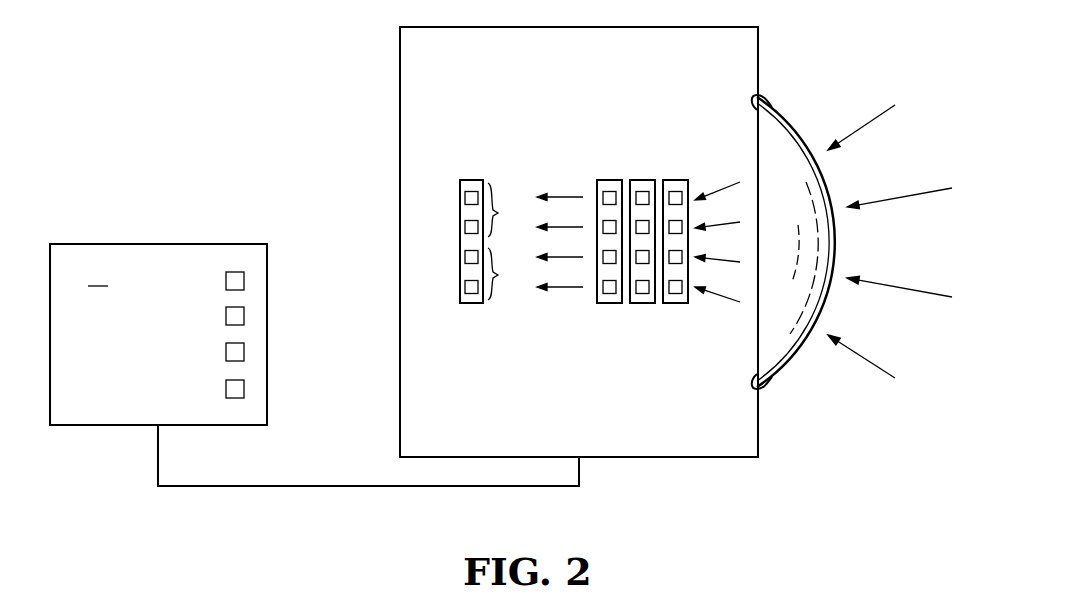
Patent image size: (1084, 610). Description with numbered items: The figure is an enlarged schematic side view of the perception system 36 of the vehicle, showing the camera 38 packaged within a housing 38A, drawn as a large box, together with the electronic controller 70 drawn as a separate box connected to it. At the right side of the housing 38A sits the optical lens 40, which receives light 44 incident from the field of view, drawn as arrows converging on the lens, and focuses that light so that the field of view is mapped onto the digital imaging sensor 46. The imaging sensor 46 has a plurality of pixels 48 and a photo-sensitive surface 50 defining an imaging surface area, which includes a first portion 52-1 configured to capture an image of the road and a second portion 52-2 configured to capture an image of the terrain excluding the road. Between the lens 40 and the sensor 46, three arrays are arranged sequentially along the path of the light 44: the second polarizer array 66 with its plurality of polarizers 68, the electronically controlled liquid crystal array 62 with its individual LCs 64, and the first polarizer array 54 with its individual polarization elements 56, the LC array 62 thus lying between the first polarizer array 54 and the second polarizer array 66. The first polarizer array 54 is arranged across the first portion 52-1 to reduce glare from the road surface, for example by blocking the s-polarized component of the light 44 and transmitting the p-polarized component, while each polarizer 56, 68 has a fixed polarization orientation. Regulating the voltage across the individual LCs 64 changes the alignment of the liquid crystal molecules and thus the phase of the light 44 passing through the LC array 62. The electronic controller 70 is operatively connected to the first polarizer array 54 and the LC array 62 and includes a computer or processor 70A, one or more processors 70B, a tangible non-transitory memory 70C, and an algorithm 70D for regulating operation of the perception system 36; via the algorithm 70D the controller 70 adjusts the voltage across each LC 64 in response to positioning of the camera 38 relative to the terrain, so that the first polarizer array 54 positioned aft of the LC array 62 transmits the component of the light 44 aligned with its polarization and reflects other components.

The perception system 36 is at (250, 180).
The camera 38 is at (388, 131).
The housing 38A is at (400, 410).
The optical lens 40 is at (785, 117).
The light 44 is at (928, 140).
The digital imaging sensor 46 is at (470, 172).
The pixels 48 is at (465, 227).
The photo-sensitive surface 50 is at (488, 185).
The first portion of imaging surface area 52-1 is at (498, 275).
The second portion of imaging surface area 52-2 is at (498, 213).
The first polarizer array 54 is at (607, 170).
The polarization elements 56 is at (607, 305).
The liquid crystal array 62 is at (638, 320).
The liquid crystals 64 is at (649, 290).
The second polarizer array 66 is at (673, 170).
The polarizers 68 is at (685, 198).
The electronic controller 70 is at (314, 365).
The computer and/or processor 70A is at (244, 281).
The processors 70B is at (244, 316).
The tangible, non-transitory memory 70C is at (244, 352).
The algorithm 70D is at (244, 389).